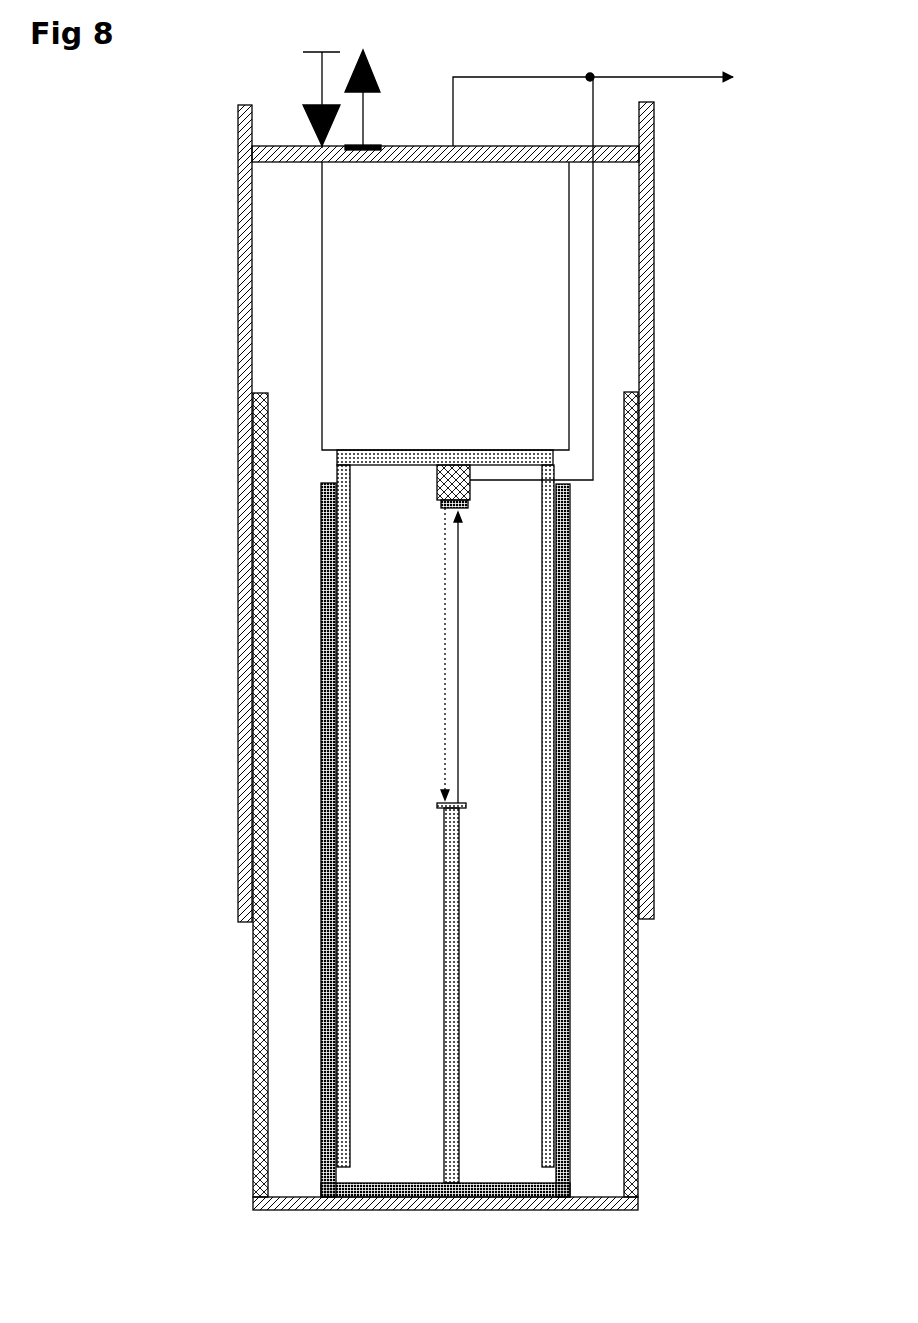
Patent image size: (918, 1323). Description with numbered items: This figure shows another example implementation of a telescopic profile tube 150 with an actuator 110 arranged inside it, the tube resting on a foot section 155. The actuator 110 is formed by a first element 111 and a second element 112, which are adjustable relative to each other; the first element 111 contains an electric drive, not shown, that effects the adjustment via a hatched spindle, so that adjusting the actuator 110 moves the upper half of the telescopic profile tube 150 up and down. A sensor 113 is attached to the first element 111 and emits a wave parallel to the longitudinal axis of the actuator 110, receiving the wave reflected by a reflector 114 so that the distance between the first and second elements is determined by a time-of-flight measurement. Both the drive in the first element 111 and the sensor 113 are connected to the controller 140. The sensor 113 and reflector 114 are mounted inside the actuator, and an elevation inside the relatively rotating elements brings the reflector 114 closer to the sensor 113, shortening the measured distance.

The actuator 110 is at (439, 679).
The first element 111 is at (462, 335).
The second element 112 is at (572, 1138).
The sensor 113 is at (470, 505).
The reflector 114 is at (466, 804).
The controller 140 is at (548, 265).
The telescopic profile tube 150 is at (238, 800).
The foot section 155 is at (637, 1207).